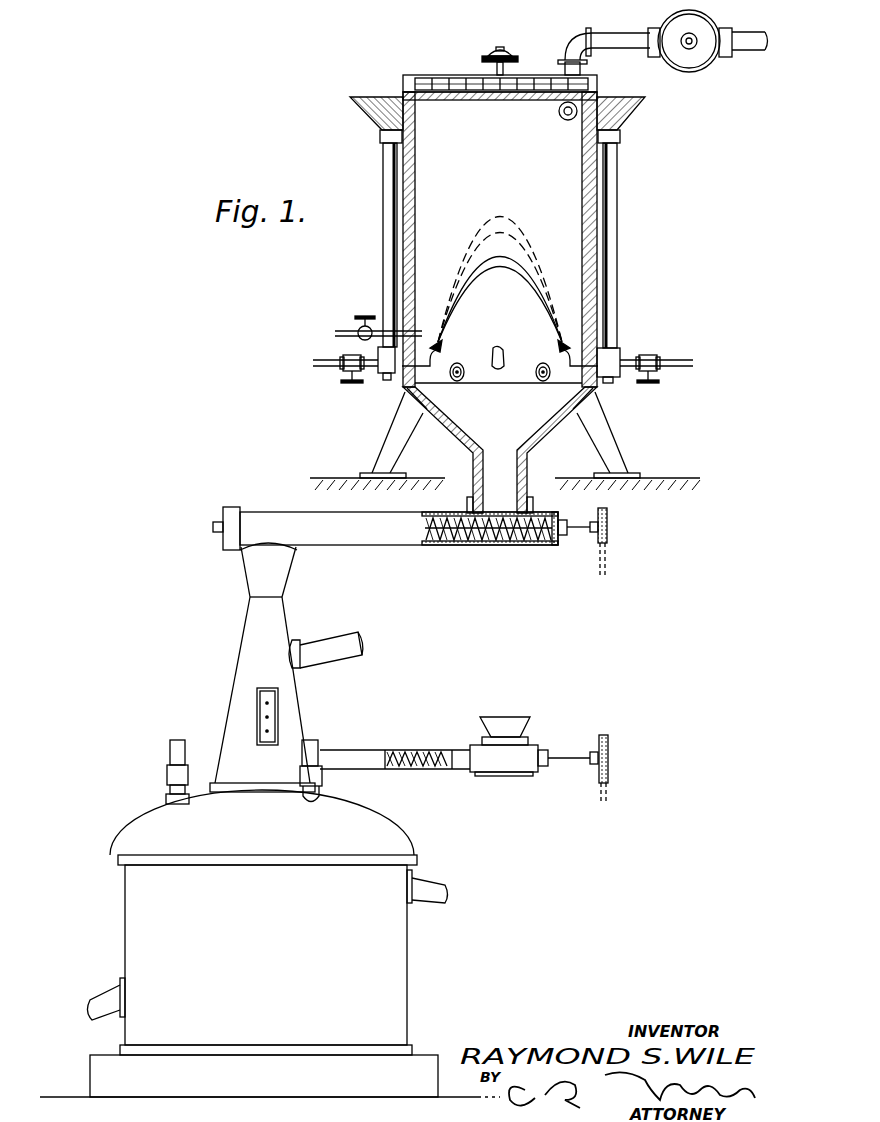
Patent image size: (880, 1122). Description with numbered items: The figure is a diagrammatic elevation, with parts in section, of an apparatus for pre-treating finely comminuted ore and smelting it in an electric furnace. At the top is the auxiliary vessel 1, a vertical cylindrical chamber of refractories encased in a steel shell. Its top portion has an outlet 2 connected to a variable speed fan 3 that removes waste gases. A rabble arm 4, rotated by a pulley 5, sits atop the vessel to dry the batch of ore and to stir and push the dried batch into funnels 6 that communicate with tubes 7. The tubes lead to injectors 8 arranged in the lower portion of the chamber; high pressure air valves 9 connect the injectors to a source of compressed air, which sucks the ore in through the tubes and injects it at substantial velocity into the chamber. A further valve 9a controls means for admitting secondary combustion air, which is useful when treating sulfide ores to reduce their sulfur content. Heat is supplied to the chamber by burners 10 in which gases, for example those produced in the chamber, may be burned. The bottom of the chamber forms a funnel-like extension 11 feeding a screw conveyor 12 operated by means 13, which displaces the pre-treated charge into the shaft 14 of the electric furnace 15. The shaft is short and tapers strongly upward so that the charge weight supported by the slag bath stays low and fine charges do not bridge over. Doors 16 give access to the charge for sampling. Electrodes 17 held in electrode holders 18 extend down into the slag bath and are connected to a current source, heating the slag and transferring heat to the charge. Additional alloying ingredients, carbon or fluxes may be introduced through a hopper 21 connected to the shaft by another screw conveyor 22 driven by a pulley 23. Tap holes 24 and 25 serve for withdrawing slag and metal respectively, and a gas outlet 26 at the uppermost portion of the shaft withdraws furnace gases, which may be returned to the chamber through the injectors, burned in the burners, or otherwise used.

The auxiliary vessel 1 is at (590, 240).
The outlet 2 is at (560, 117).
The variable speed fan 3 is at (700, 64).
The rabble arm 4 is at (448, 78).
The pulley 5 is at (508, 56).
The funnels 6 is at (362, 100).
The tubes 7 is at (392, 186).
The injectors 8 is at (410, 322).
The high pressure air valves 9 is at (345, 358).
The valve 9a is at (360, 333).
The burners 10 is at (540, 380).
The funnel-like extension 11 is at (562, 425).
The screw conveyor 12 is at (480, 540).
The operating means 13 is at (608, 518).
The shaft 14 is at (258, 620).
The electric furnace 15 is at (270, 943).
The doors 16 is at (257, 712).
The electrodes 17 is at (172, 748).
The electrode holders 18 is at (166, 777).
The hopper 21 is at (533, 720).
The screw conveyor 22 is at (422, 750).
The pulley 23 is at (612, 776).
The tap hole 24 is at (440, 888).
The tap hole 25 is at (96, 992).
The gas outlet 26 is at (346, 637).